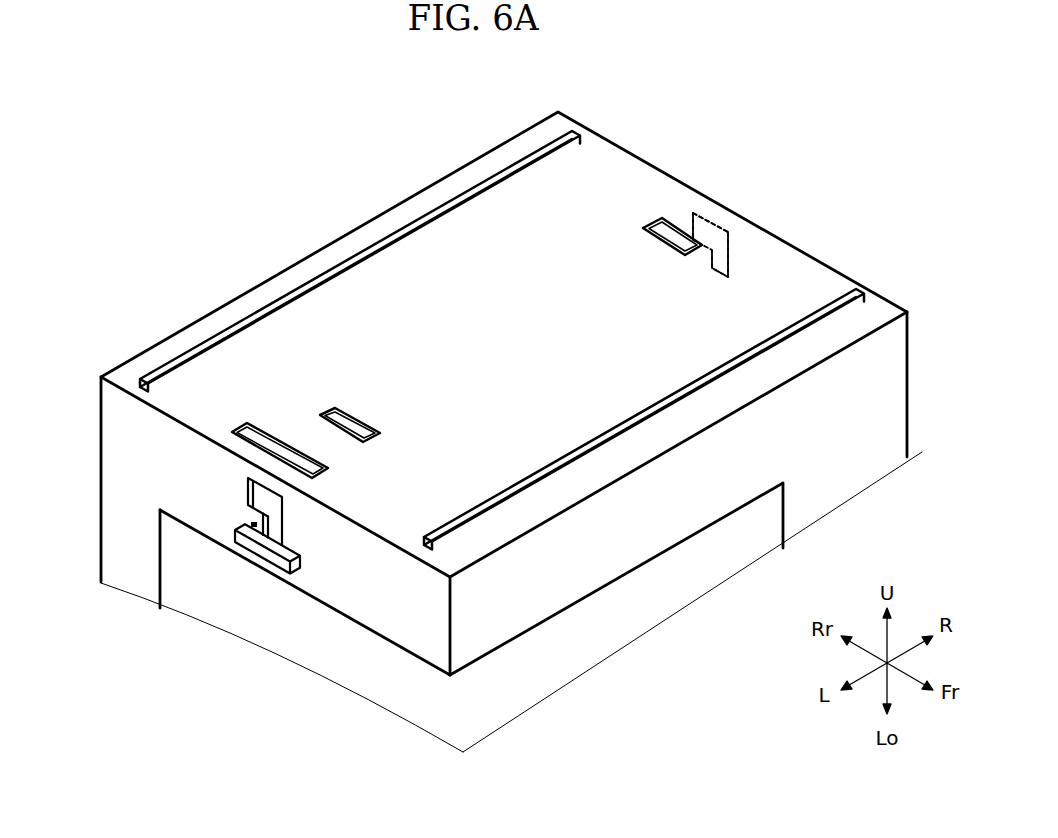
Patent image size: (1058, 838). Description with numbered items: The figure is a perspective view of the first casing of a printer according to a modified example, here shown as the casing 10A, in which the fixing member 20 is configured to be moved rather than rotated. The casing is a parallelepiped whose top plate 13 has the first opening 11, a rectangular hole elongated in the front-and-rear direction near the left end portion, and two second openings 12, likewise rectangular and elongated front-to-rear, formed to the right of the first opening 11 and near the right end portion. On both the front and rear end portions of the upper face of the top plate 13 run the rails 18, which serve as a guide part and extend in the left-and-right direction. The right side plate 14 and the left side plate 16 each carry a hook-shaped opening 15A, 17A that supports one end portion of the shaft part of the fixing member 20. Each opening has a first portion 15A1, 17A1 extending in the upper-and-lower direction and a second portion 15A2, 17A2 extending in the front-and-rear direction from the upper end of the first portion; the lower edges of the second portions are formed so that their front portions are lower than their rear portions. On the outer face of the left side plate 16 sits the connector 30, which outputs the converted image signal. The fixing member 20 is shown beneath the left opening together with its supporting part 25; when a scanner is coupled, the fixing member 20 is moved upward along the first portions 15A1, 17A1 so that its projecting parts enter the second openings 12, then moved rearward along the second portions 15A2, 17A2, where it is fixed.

The electronic device 10A is at (491, 418).
The first opening 11 is at (258, 424).
The second opening 12 is at (338, 410).
The top plate 13 is at (603, 175).
The right side plate 14 is at (852, 280).
The hook-shaped opening 15A is at (731, 227).
The first portion 15A1 is at (730, 255).
The second portion 15A2 is at (710, 220).
The left side plate 16 is at (132, 518).
The hook-shaped opening 17A is at (265, 500).
The first portion 17A1 is at (285, 510).
The second portion 17A2 is at (245, 488).
The rail 18 is at (447, 197).
The fixing member 20 is at (238, 563).
The bar 25 is at (272, 571).
The connector 30 is at (252, 525).